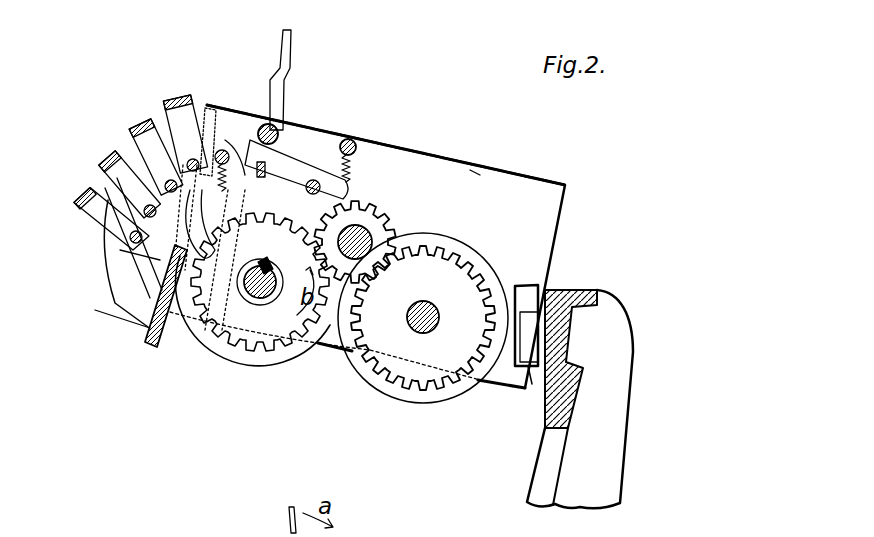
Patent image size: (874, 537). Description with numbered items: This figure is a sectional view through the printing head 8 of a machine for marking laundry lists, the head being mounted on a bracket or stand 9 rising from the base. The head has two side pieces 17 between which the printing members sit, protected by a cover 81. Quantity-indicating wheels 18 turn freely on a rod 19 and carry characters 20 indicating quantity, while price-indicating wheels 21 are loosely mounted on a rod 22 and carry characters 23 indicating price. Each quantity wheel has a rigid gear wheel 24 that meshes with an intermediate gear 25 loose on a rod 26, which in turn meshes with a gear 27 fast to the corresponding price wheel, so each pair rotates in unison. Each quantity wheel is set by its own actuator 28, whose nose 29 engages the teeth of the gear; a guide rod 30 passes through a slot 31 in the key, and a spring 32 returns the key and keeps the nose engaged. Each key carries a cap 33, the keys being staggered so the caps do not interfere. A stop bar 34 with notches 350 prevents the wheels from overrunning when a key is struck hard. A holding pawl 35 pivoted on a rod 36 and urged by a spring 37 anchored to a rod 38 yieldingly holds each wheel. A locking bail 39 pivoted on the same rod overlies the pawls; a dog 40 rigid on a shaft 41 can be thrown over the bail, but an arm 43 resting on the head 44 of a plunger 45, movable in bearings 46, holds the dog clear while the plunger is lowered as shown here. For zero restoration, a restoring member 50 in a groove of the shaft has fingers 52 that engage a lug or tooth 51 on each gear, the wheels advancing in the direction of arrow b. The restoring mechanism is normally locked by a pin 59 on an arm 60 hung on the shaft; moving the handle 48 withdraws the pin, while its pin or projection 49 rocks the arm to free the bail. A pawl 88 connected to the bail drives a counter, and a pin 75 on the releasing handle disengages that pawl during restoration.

The printing head 8 is at (123, 248).
The bracket or stand 9 is at (610, 340).
The side pieces 17 is at (520, 213).
The quantity-indicating wheels 18 is at (290, 300).
The rod 19 is at (312, 322).
The characters 20 is at (330, 353).
The price-indicating wheels 21 is at (447, 393).
The rod 22 is at (424, 301).
The characters 23 is at (492, 365).
The gear wheel 24 is at (272, 405).
The pinion or intermediate gear 25 is at (397, 180).
The rod 26 is at (363, 233).
The gear 27 is at (463, 287).
The actuator 28 is at (140, 125).
The nose 29 is at (115, 300).
The guide rod 30 is at (227, 143).
The slot 31 is at (63, 253).
The spring 32 is at (253, 102).
The cap 33 is at (127, 128).
The stop bar 34 is at (158, 360).
The holding pawl 35 is at (328, 138).
The rod 36 is at (337, 133).
The spring 37 is at (387, 147).
The rod 38 is at (374, 137).
The locking bail 39 is at (303, 120).
The dog 40 is at (240, 130).
The shaft 41 is at (300, 118).
The arm 43 is at (252, 256).
The head 44 is at (335, 68).
The plunger 45 is at (184, 400).
The bearings 46 is at (178, 404).
The handle 48 is at (283, 53).
The pin or projection 49 is at (290, 110).
The restoring member 50 is at (257, 310).
The lug or tooth 51 is at (171, 376).
The fingers 52 is at (272, 272).
The pin 59 is at (148, 344).
The arm 60 is at (181, 340).
The pin 75 is at (325, 188).
The cover 81 is at (477, 173).
The pawl 88 is at (351, 79).
The notches 350 is at (120, 286).